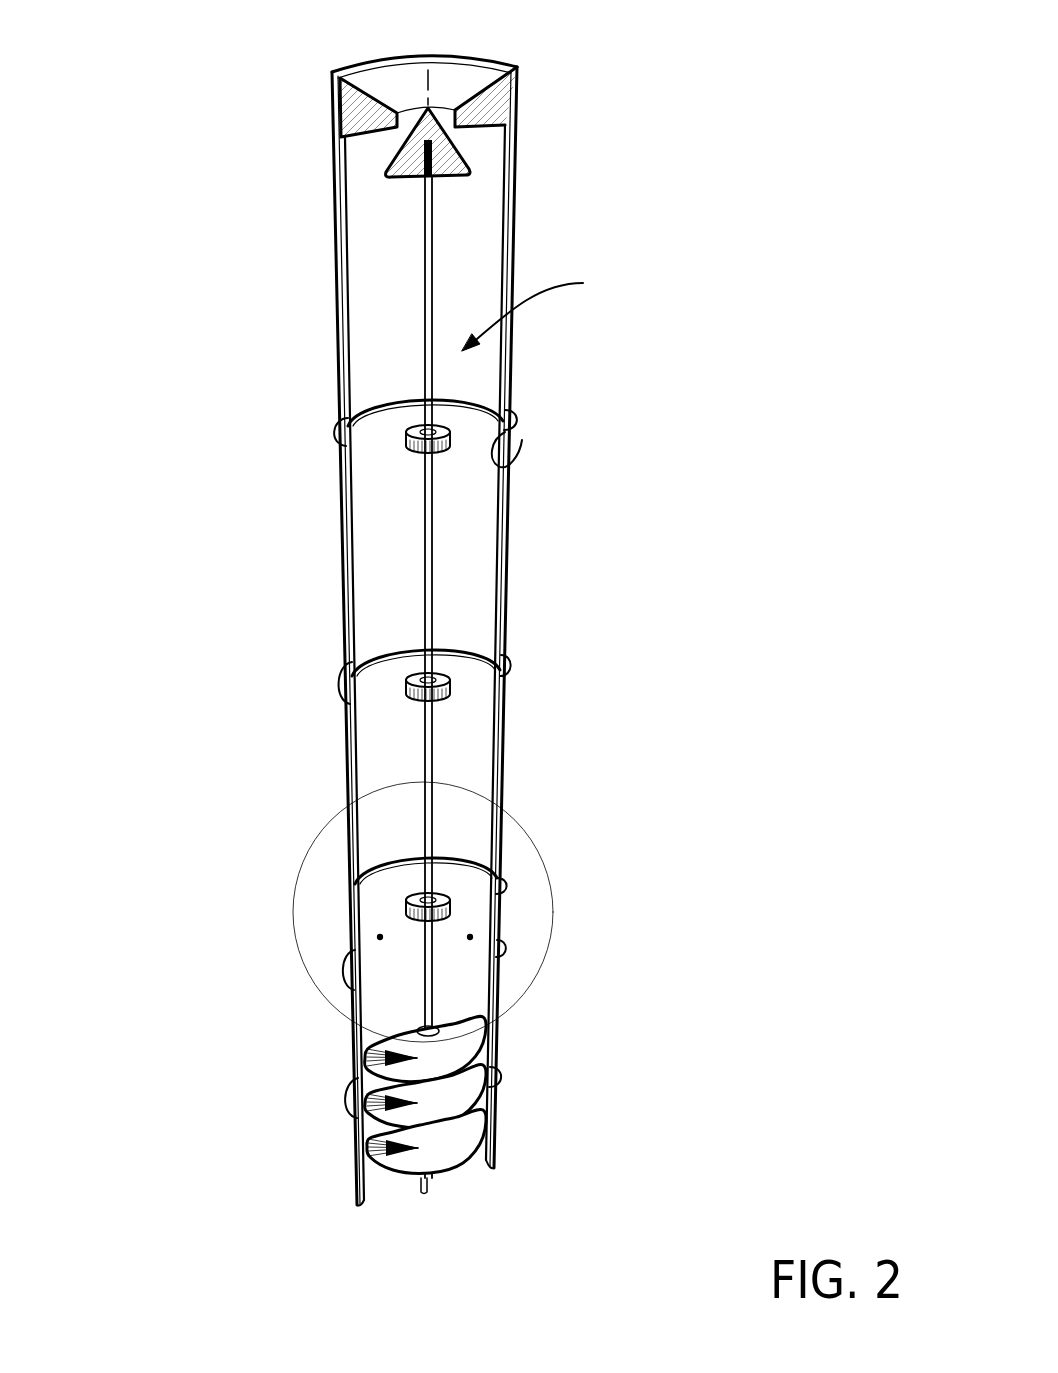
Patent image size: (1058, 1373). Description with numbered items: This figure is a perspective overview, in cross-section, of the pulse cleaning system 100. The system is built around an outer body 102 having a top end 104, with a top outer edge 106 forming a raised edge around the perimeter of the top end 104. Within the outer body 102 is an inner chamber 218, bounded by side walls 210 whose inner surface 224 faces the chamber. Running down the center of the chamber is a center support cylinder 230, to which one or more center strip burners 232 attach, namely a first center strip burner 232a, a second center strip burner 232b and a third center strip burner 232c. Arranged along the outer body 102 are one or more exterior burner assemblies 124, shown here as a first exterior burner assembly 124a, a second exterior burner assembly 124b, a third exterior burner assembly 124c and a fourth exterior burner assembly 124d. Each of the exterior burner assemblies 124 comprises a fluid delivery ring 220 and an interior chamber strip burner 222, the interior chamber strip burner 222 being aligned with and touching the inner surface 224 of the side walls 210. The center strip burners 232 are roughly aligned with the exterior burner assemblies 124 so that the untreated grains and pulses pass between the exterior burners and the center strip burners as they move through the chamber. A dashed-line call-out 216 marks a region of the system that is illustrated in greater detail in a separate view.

The pulse cleaning system 100 is at (405, 607).
The outer body 102 is at (337, 237).
The top end 104 is at (390, 78).
The top outer edge 106 is at (487, 62).
The side walls 210 is at (540, 662).
The inner surface 224 is at (484, 268).
The inner chamber 218 is at (556, 308).
The center support cylinder 230 is at (433, 553).
The exterior burner assemblies 124 is at (278, 762).
The first exterior burner assembly 124a is at (343, 432).
The second exterior burner assembly 124b is at (345, 692).
The third exterior burner assembly 124c is at (348, 903).
The fourth exterior burner assembly 124d is at (348, 1100).
The center strip burners 232 is at (585, 701).
The first center strip burner 232a is at (448, 452).
The second center strip burner 232b is at (448, 690).
The third center strip burner 232c is at (448, 915).
The fluid delivery ring 220 is at (518, 420).
The interior chamber strip burner 222 is at (490, 440).
The call-out 216 is at (545, 870).